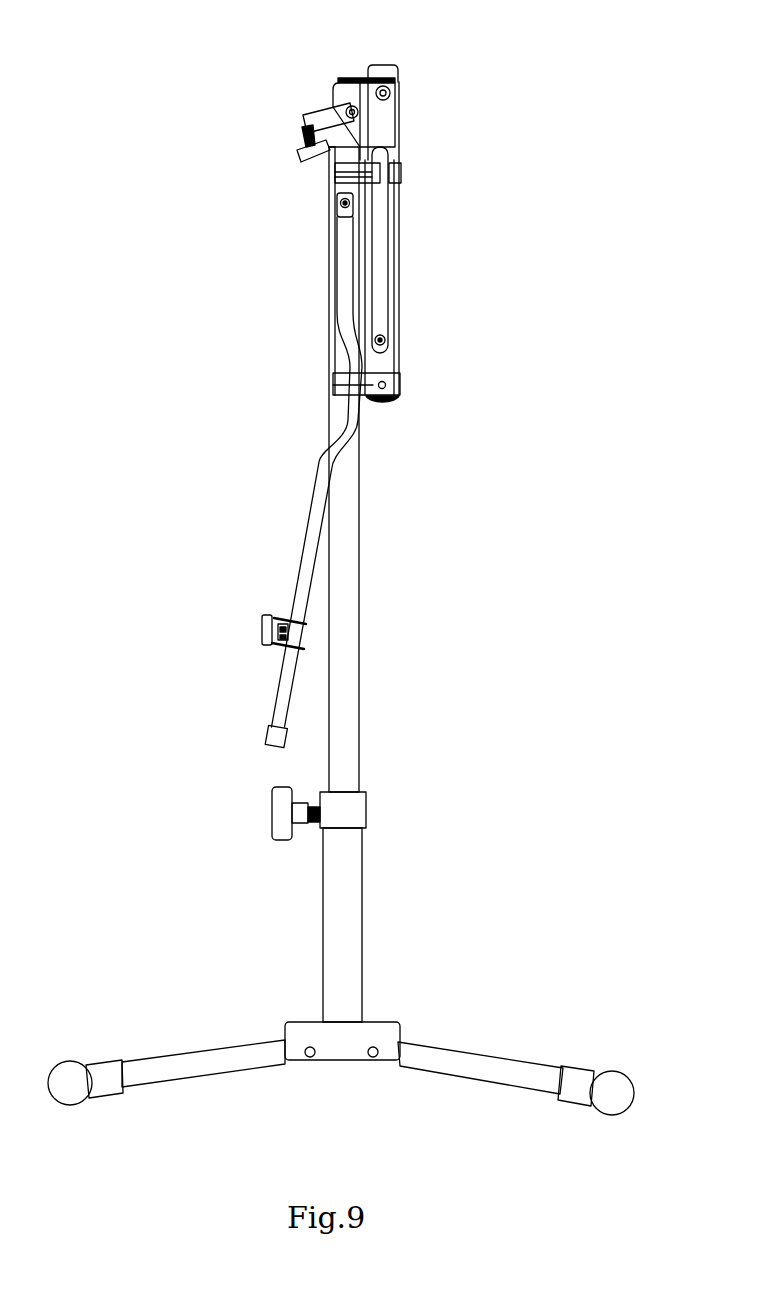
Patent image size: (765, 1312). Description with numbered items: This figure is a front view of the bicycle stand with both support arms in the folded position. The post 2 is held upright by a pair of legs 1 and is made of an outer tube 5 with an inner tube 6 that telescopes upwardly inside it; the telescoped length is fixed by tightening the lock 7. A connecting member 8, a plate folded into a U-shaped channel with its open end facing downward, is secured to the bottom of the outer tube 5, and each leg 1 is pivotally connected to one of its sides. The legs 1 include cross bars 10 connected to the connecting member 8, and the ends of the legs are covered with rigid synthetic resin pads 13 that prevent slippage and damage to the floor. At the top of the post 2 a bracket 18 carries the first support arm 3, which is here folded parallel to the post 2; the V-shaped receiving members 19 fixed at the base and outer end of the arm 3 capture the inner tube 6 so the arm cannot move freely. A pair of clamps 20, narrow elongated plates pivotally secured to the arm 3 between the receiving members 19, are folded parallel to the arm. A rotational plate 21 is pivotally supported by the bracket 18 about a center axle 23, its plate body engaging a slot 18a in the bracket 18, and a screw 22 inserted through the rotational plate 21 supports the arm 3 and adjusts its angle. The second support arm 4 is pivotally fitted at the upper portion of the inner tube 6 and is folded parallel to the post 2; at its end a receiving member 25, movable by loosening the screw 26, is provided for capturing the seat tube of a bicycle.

The legs 1 is at (340, 1042).
The post 2 is at (372, 584).
The first support arm 3 is at (392, 125).
The second support arm 4 is at (328, 467).
The outer tube 5 is at (360, 878).
The inner tube 6 is at (360, 573).
The lock 7 is at (298, 825).
The connecting member 8 is at (346, 1060).
The cross bars 10 is at (222, 1048).
The pads 13 is at (70, 1070).
The bracket 18 is at (353, 78).
The slot 18a is at (337, 90).
The receiving members 19 is at (330, 175).
The clamps 20 is at (383, 238).
The rotational plate 21 is at (318, 108).
The screw 22 is at (300, 115).
The center axle 23 is at (307, 147).
The receiving member 25 is at (267, 622).
The screw 26 is at (283, 650).